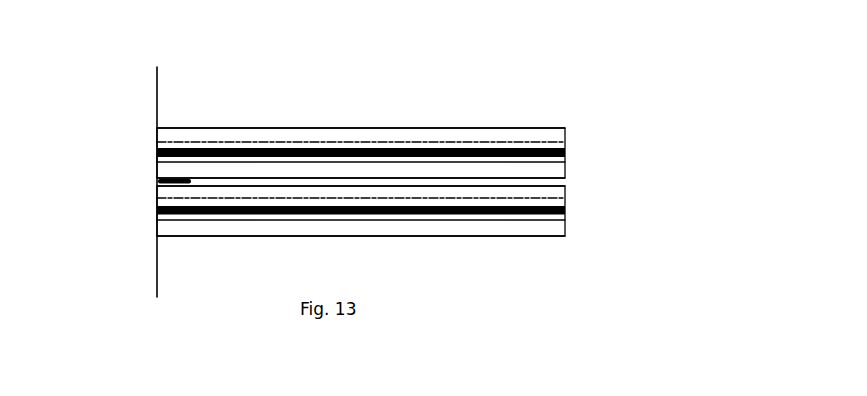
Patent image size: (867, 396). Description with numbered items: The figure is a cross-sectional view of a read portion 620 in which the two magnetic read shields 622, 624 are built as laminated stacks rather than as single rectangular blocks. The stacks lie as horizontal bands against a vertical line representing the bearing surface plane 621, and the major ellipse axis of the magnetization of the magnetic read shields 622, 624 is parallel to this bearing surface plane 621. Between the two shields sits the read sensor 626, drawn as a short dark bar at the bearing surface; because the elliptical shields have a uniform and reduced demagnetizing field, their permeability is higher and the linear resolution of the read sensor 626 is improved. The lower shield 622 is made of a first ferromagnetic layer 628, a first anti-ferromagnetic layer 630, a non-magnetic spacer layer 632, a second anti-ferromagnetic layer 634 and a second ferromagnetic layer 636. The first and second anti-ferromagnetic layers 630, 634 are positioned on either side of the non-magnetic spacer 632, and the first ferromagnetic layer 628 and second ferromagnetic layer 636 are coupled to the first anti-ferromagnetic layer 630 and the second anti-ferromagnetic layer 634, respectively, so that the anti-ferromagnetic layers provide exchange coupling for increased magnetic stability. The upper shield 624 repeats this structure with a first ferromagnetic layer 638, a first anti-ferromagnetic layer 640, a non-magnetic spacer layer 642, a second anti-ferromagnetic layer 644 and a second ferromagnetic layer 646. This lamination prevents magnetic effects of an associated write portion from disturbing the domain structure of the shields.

The read portion 620 is at (382, 190).
The bearing surface plane 621 is at (150, 106).
The magnetic read shield 622 is at (404, 251).
The magnetic read shield 624 is at (404, 128).
The read sensor 626 is at (157, 180).
The first ferromagnetic layer 628 is at (193, 228).
The first anti-ferromagnetic layer 630 is at (259, 215).
The non-magnetic spacer layer 632 is at (357, 210).
The second anti-ferromagnetic layer 634 is at (465, 203).
The second ferromagnetic layer 636 is at (520, 192).
The first ferromagnetic layer 638 is at (172, 167).
The first anti-ferromagnetic layer 640 is at (252, 158).
The non-magnetic spacer layer 642 is at (362, 147).
The second anti-ferromagnetic layer 644 is at (436, 146).
The second ferromagnetic layer 646 is at (519, 136).